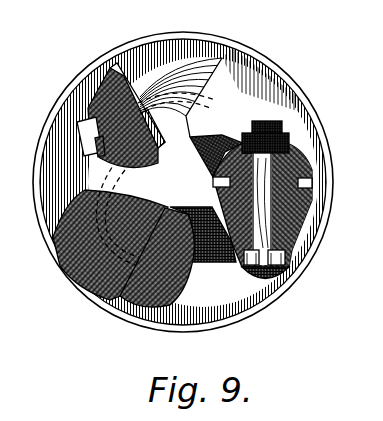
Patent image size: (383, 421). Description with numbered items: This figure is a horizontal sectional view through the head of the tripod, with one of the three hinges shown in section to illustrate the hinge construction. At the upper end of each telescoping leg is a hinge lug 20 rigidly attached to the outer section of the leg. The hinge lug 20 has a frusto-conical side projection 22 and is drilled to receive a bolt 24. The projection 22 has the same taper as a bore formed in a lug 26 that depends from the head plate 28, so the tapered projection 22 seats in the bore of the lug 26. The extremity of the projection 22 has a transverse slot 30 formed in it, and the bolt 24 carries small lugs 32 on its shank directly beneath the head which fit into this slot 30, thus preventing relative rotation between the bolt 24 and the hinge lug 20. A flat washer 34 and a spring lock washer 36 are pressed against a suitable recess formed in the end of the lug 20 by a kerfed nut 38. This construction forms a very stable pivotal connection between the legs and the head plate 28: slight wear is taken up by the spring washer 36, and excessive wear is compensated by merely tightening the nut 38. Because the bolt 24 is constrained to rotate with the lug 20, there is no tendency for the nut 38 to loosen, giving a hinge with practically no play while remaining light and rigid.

The hinge lug 20 is at (100, 90).
The frusto-conical side projection 22 is at (314, 218).
The bolt 24 is at (300, 242).
The lug 26 is at (160, 65).
The head plate 28 is at (209, 250).
The transverse slot 30 is at (288, 258).
The small lugs 32 is at (282, 273).
The flat washer 34 is at (290, 148).
The spring lock washer 36 is at (289, 138).
The kerfed nut 38 is at (272, 126).